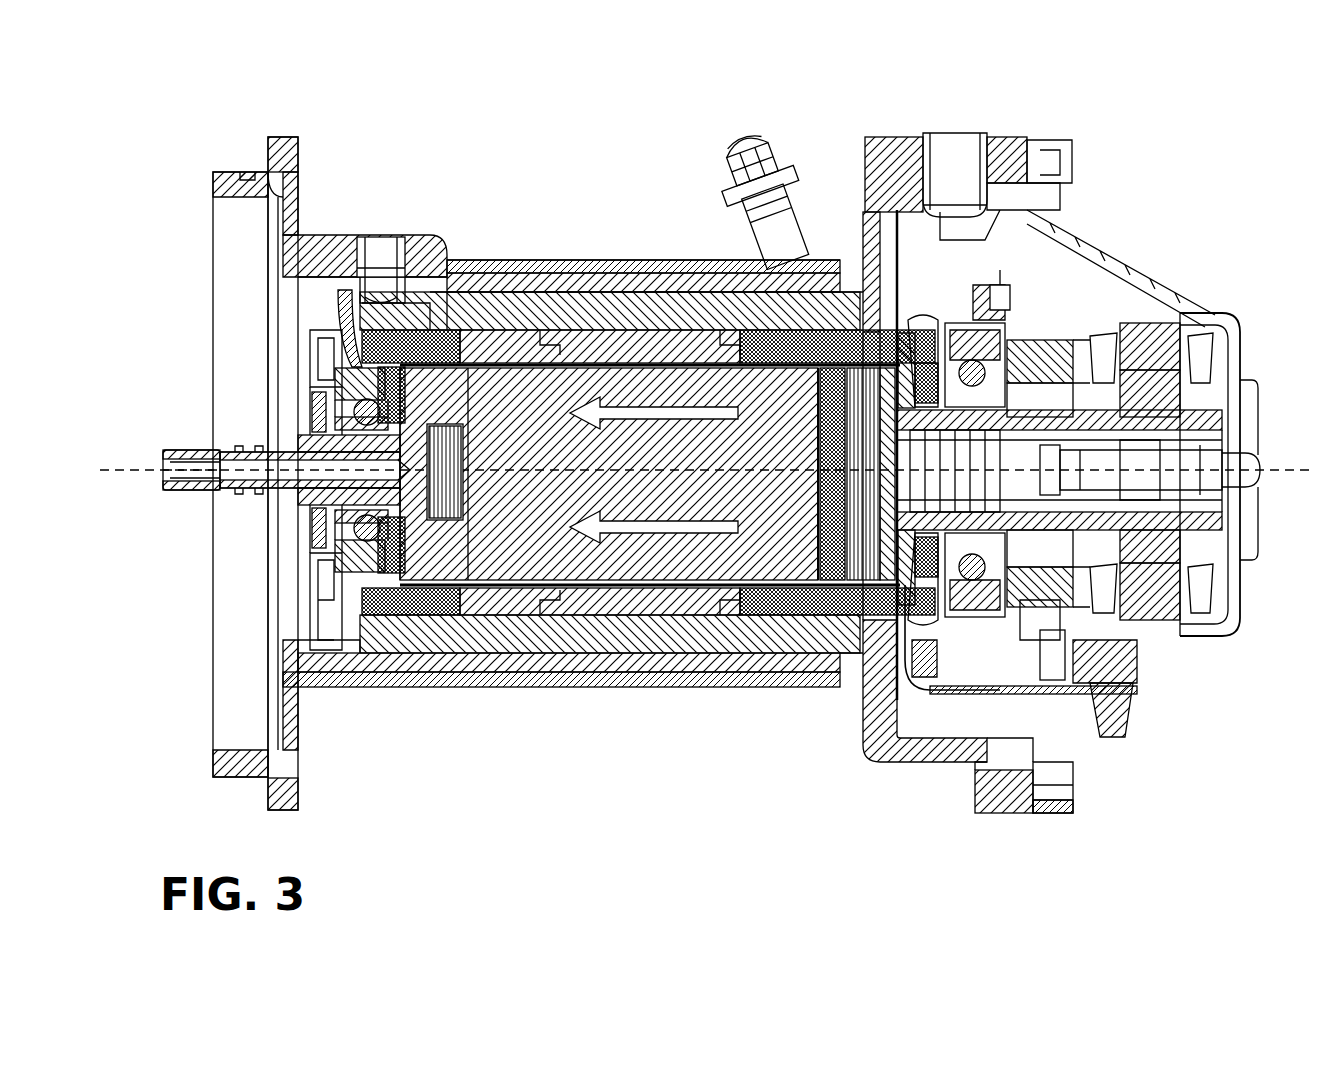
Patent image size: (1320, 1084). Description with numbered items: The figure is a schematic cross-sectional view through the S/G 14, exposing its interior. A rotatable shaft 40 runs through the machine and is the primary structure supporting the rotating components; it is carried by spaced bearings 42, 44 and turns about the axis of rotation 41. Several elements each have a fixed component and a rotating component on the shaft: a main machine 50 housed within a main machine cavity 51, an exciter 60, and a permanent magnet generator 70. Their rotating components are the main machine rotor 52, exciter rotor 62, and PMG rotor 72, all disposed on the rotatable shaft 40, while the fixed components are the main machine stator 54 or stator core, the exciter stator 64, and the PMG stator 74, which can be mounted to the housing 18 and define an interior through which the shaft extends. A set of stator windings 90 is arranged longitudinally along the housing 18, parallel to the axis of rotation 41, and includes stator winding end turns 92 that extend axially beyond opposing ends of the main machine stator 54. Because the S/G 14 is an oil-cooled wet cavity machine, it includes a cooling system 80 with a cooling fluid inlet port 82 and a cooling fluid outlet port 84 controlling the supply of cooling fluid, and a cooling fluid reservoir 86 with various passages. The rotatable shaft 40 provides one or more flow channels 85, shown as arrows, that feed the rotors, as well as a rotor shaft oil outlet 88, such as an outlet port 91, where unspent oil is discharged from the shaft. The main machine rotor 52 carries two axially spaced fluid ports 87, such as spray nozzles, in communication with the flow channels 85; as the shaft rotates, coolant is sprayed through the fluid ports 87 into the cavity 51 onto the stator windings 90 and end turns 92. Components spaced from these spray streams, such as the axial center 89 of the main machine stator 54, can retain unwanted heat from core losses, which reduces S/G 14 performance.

The S/G 14 is at (432, 188).
The housing 18 is at (540, 260).
The rotatable shaft 40 is at (250, 505).
The axis of rotation 41 is at (1275, 480).
The bearing 42 is at (335, 592).
The bearing 44 is at (935, 742).
The main machine 50 is at (596, 250).
The main machine cavity 51 is at (432, 308).
The main machine rotor 52 is at (490, 560).
The main machine stator 54 is at (520, 620).
The exciter 60 is at (1162, 320).
The exciter rotor 62 is at (1165, 565).
The exciter stator 64 is at (1150, 565).
The permanent magnet generator 70 is at (1070, 328).
The PMG rotor 72 is at (1010, 632).
The PMG stator 74 is at (1055, 540).
The cooling system 80 is at (415, 300).
The cooling fluid inlet port 82 is at (372, 250).
The cooling fluid outlet port 84 is at (745, 175).
The flow channels 85 is at (630, 522).
The cooling fluid reservoir 86 is at (915, 705).
The fluid port 87 is at (330, 396).
The rotor shaft oil outlet 88 is at (160, 478).
The axial center 89 is at (650, 318).
The stator windings 90 is at (742, 328).
The outlet port 91 is at (158, 452).
The stator winding end turns 92 is at (858, 320).